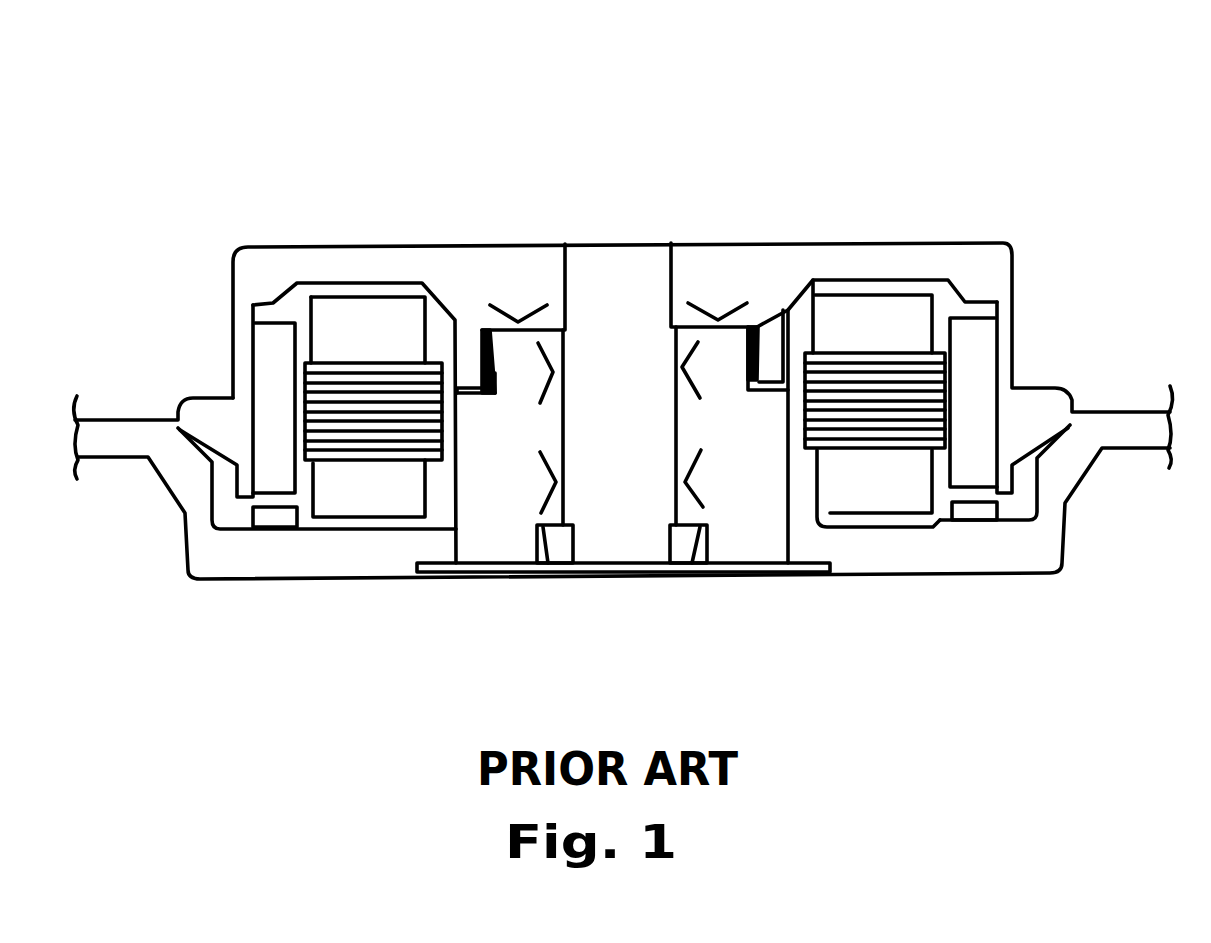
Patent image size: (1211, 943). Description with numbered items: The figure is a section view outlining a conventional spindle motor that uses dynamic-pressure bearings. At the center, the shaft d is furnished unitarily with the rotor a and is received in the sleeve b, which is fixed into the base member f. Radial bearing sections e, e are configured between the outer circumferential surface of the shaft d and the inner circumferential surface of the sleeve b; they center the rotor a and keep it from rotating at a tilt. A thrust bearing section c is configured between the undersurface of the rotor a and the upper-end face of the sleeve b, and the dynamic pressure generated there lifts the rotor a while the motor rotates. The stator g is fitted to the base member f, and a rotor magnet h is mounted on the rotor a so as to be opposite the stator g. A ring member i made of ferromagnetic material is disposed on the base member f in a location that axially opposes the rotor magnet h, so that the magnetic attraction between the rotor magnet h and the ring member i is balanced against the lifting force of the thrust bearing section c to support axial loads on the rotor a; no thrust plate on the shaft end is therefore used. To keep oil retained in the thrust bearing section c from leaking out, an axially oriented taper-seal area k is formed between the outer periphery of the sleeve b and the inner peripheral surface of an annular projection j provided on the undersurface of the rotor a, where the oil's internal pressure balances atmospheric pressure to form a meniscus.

The rotor a is at (835, 265).
The sleeve b is at (745, 447).
The thrust bearing section c is at (705, 340).
The shaft d is at (597, 285).
The radial bearing sections e is at (682, 362).
The base member f is at (958, 552).
The stator g is at (355, 330).
The rotor magnet h is at (273, 413).
The ring member i is at (278, 518).
The annular projection j is at (773, 352).
The taper-seal area k is at (490, 372).